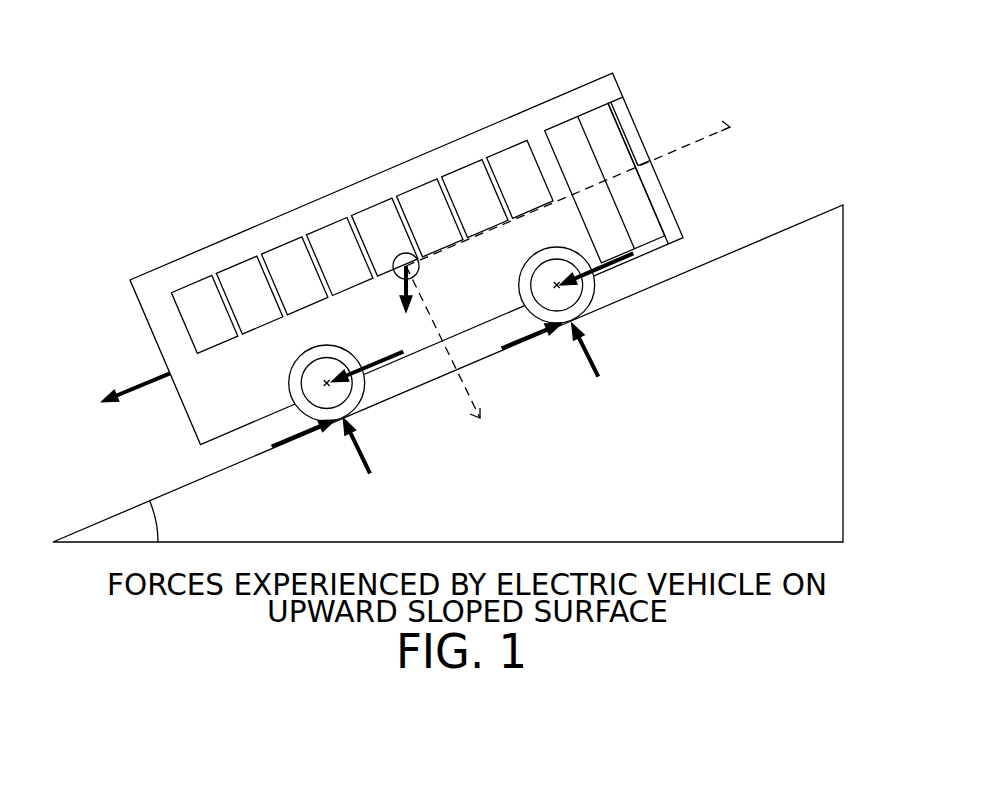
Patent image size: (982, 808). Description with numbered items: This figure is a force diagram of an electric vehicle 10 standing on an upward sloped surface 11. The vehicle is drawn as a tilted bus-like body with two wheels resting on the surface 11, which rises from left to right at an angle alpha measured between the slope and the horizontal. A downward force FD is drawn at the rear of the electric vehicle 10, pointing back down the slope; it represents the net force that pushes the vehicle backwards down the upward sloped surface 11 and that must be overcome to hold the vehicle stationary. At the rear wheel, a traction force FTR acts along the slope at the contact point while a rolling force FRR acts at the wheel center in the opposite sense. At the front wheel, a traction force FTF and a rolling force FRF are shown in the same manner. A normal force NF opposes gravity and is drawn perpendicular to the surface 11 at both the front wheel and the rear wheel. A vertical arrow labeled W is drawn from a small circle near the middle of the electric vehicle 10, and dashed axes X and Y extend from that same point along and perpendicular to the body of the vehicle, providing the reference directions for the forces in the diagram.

The electric vehicle 10 is at (416, 283).
The upward sloped surface 11 is at (803, 220).
The weight force W is at (397, 289).
The downward force FD is at (136, 378).
The rolling force FRR is at (368, 357).
The traction force FTR is at (302, 429).
The rolling force FRF is at (596, 259).
The traction force FTF is at (530, 331).
The normal force NF is at (483, 408).
The X axis X is at (568, 184).
The Y axis Y is at (450, 356).